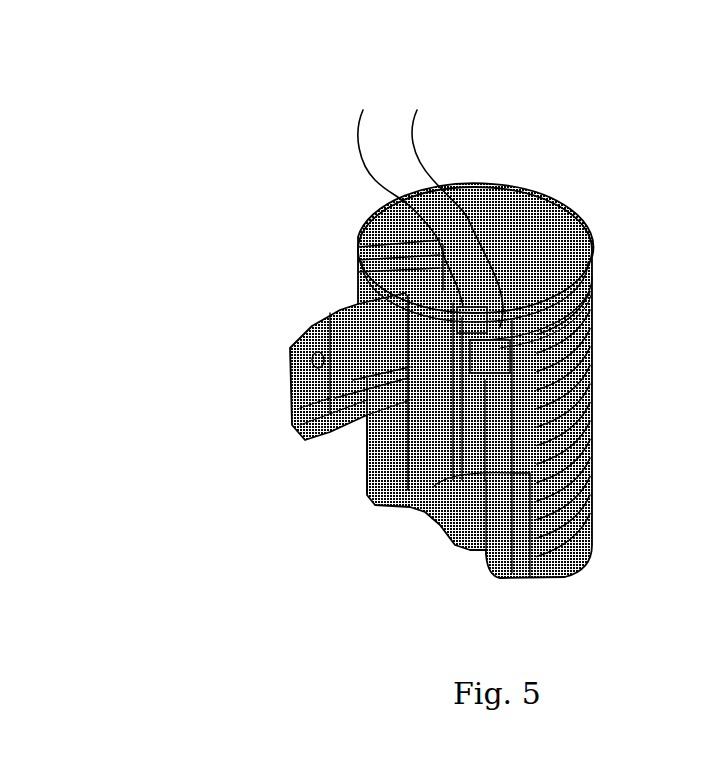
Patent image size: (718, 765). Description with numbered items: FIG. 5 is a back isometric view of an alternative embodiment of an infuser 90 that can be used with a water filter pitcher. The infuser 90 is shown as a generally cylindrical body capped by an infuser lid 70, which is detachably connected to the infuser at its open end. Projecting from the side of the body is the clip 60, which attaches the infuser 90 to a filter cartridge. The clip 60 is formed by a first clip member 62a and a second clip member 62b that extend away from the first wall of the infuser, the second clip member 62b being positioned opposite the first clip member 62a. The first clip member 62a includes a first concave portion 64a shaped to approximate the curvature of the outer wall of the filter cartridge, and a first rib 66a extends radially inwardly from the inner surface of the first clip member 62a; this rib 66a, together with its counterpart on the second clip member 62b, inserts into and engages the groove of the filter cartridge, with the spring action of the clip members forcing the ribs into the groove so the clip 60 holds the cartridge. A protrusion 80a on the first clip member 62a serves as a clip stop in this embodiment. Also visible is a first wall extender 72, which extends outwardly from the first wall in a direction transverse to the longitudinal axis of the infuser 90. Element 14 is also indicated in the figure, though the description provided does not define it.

The retainer 14 is at (447, 220).
The clip 60 is at (350, 545).
The first clip member 62a is at (358, 308).
The second clip member 62b is at (453, 522).
The first concave portion 64a is at (360, 417).
The first rib 66a is at (307, 437).
The infuser lid 70 is at (570, 218).
The first wall extender 72 is at (399, 274).
The protrusion 80a is at (330, 312).
The infuser 90 is at (541, 162).